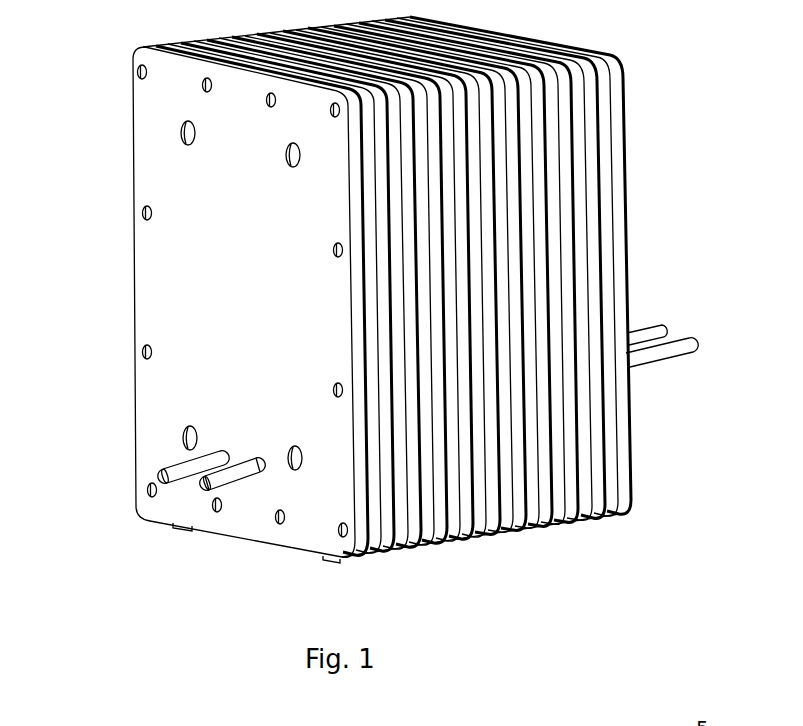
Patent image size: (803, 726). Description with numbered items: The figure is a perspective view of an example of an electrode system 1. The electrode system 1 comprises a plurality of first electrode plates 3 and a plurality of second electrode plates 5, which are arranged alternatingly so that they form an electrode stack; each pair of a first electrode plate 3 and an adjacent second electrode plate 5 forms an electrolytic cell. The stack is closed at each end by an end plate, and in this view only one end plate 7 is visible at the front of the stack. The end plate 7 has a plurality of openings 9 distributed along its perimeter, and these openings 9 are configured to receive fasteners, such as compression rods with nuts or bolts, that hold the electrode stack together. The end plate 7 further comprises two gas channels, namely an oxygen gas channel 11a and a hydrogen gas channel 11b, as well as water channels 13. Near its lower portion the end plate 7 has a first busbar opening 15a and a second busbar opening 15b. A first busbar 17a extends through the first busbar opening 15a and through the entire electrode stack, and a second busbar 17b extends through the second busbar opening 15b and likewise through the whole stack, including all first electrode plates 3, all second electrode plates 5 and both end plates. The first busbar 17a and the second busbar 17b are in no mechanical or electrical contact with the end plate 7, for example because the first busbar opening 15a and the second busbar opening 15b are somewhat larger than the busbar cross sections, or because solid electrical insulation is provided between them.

The electrode system 1 is at (714, 156).
The first electrode plate 3 is at (385, 538).
The second electrode plate 5 is at (396, 540).
The end plate 7 is at (308, 534).
The openings 9 is at (138, 66).
The oxygen gas channel 11a is at (181, 132).
The hydrogen gas channel 11b is at (286, 156).
The water channels 13 is at (183, 436).
The first busbar opening 15a is at (162, 474).
The second busbar opening 15b is at (256, 470).
The first busbar 17a is at (204, 484).
The second busbar 17b is at (198, 486).